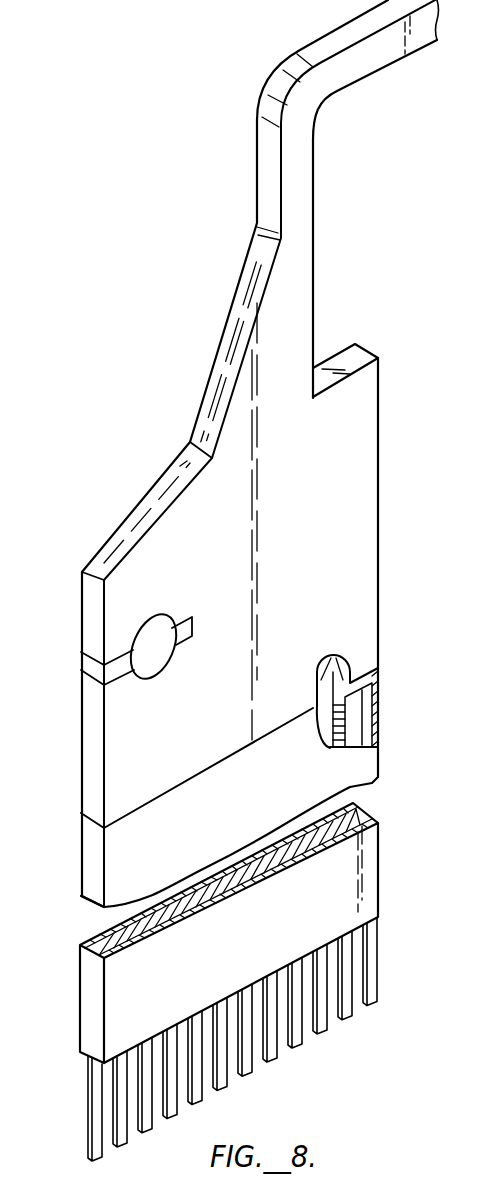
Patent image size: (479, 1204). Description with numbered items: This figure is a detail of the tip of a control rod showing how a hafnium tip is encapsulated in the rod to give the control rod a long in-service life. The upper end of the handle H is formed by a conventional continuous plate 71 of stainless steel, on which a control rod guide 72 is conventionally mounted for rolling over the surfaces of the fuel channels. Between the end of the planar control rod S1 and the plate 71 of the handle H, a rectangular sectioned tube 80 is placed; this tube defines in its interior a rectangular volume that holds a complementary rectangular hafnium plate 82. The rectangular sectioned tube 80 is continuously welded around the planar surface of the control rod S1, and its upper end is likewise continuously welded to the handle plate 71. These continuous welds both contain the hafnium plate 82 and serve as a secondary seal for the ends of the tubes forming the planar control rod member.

The plate 71 is at (75, 571).
The control rod guide 72 is at (157, 648).
The handle H is at (380, 505).
The rectangular sectioned tube 80 is at (90, 977).
The hafnium plate 82 is at (118, 935).
The control rod S1 is at (98, 1118).